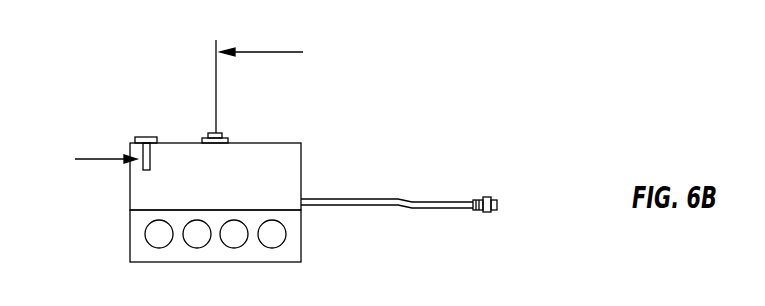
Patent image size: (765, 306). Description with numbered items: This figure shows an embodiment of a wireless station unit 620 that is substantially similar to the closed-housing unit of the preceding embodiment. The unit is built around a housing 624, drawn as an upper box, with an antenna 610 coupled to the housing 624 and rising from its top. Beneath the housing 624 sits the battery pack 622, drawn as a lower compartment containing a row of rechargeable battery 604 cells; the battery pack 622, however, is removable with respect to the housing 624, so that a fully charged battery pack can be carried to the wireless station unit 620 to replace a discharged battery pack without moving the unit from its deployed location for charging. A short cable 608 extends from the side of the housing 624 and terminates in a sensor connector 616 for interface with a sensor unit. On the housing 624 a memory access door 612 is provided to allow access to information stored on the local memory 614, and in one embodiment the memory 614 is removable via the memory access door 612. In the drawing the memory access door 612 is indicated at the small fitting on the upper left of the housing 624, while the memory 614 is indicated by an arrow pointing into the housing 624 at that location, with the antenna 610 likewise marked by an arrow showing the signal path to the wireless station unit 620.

The rechargeable battery 604 is at (197, 248).
The short cable 608 is at (428, 208).
The antenna 610 is at (275, 52).
The memory access door 612 is at (144, 136).
The local memory 614 is at (102, 162).
The sensor connector 616 is at (481, 196).
The wireless station unit 620 is at (326, 101).
The battery pack 622 is at (301, 258).
The housing 624 is at (277, 143).